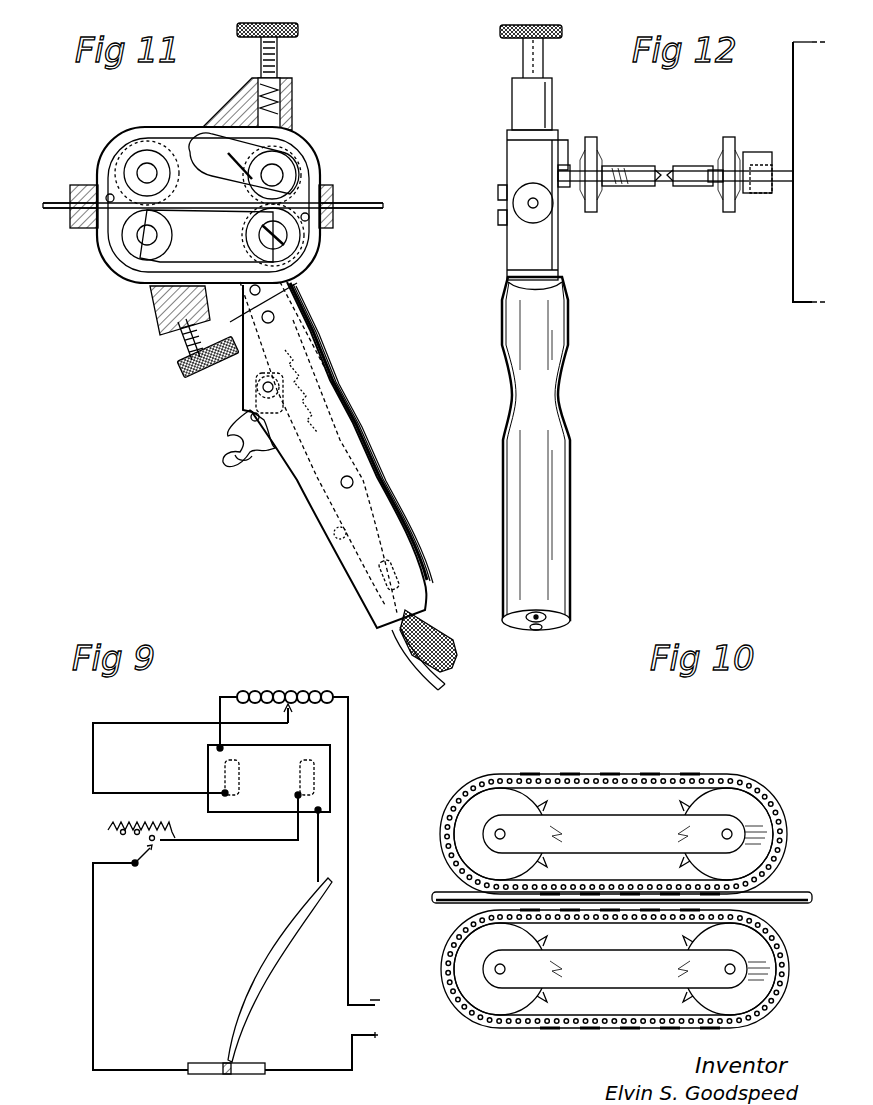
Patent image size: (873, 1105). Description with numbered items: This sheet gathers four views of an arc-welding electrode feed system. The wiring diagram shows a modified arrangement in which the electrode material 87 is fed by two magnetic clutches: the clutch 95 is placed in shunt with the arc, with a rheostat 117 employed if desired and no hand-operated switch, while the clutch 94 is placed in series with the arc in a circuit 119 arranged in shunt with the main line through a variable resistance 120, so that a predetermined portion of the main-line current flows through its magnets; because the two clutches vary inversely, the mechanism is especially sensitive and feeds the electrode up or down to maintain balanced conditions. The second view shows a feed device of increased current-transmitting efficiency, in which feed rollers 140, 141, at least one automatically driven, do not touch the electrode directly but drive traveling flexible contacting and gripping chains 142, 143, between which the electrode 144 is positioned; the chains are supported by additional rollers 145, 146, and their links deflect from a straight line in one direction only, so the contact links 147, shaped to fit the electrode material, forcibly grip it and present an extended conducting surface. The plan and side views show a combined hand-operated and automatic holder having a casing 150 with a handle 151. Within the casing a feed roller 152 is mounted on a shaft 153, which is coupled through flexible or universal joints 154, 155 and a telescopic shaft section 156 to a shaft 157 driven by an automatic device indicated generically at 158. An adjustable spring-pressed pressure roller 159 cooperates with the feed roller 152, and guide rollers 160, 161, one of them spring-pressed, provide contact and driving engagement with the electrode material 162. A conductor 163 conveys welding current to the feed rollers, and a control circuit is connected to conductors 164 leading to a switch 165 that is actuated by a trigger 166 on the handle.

In FIG. 9, the electrode material 87 is at (266, 955).
In FIG. 9, the clutch 94 is at (225, 775).
In FIG. 9, the clutch 95 is at (312, 777).
In FIG. 9, the rheostat 117 is at (160, 845).
In FIG. 9, the circuit 119 is at (140, 723).
In FIG. 9, the variable resistance 120 is at (272, 693).
In FIG. 10, the feed roller 140 is at (464, 838).
In FIG. 10, the feed roller 141 is at (470, 965).
In FIG. 10, the chain 142 is at (605, 778).
In FIG. 10, the chain 143 is at (625, 1030).
In FIG. 10, the electrode 144 is at (797, 894).
In FIG. 10, the roller 145 is at (757, 812).
In FIG. 10, the roller 146 is at (745, 1000).
In FIG. 10, the contact links 147 is at (716, 778).
In FIG. 12, the casing 150 is at (550, 247).
In FIG. 12, the handle 151 is at (550, 462).
In FIG. 11, the feed roller 152 is at (152, 142).
In FIG. 11, the shaft 153 is at (145, 172).
In FIG. 12, the shaft 153 is at (576, 170).
In FIG. 12, the flexible joint 154 is at (594, 150).
In FIG. 12, the flexible joint 155 is at (735, 207).
In FIG. 12, the telescopic shaft section 156 is at (640, 185).
In FIG. 12, the shaft 157 is at (780, 170).
In FIG. 12, the automatic device 158 is at (793, 286).
In FIG. 11, the pressure roller 159 is at (125, 258).
In FIG. 11, the guide roller 160 is at (296, 248).
In FIG. 11, the guide roller 161 is at (295, 163).
In FIG. 11, the electrode material 162 is at (365, 207).
In FIG. 11, the conductor 163 is at (440, 630).
In FIG. 11, the conductors 164 is at (396, 655).
In FIG. 11, the switch 165 is at (245, 400).
In FIG. 11, the trigger 166 is at (225, 440).